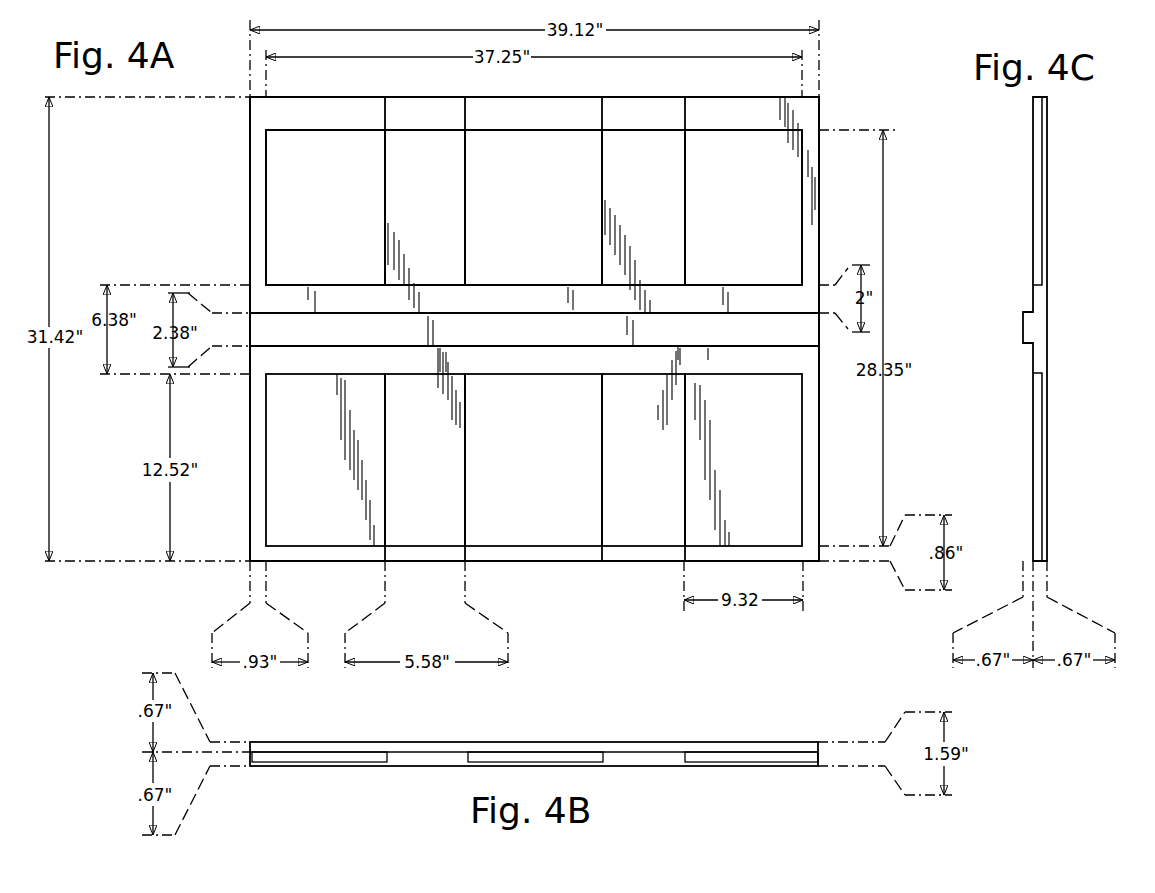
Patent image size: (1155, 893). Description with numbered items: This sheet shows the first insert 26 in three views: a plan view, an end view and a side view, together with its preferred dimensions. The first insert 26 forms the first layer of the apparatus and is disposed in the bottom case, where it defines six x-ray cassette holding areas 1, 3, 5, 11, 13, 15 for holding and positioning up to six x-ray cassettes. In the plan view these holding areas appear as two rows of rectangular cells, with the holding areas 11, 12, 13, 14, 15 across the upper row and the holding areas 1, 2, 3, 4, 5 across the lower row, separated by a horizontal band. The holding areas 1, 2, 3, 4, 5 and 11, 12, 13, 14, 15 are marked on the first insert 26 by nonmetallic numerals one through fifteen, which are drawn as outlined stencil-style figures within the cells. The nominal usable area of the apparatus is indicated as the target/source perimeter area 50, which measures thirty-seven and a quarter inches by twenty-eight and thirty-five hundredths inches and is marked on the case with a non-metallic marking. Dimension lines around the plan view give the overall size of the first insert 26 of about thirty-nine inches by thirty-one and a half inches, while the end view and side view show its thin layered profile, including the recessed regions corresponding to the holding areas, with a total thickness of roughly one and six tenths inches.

In FIG. 4A, the first insert 26 is at (212, 175).
In FIG. 4B, the first insert 26 is at (277, 787).
In FIG. 4C, the first insert 26 is at (1062, 188).
In FIG. 4A, the target/source perimeter area 50 is at (565, 130).
In FIG. 4A, the x-ray cassette holding area 1 is at (325, 460).
In FIG. 4A, the holding area 2 is at (425, 460).
In FIG. 4A, the x-ray cassette holding area 3 is at (533, 460).
In FIG. 4A, the holding area 4 is at (643, 460).
In FIG. 4A, the x-ray cassette holding area 5 is at (743, 460).
In FIG. 4A, the x-ray cassette holding area 11 is at (325, 207).
In FIG. 4A, the holding area 12 is at (425, 207).
In FIG. 4A, the x-ray cassette holding area 13 is at (533, 207).
In FIG. 4A, the holding area 14 is at (643, 207).
In FIG. 4A, the x-ray cassette holding area 15 is at (743, 207).